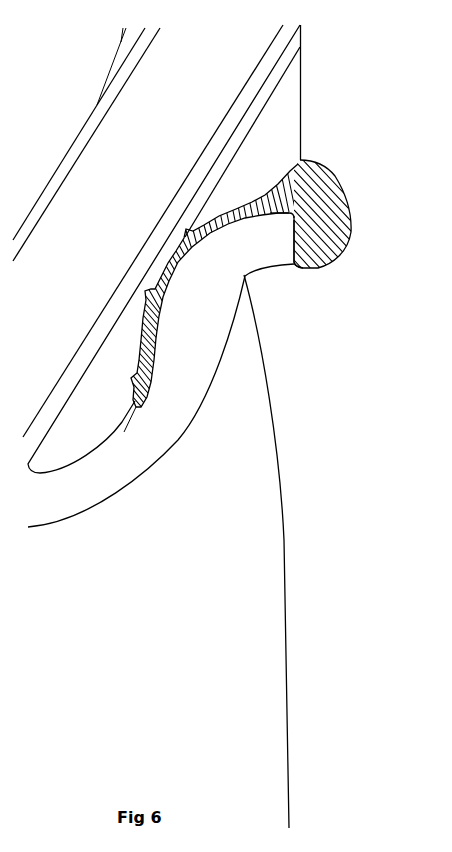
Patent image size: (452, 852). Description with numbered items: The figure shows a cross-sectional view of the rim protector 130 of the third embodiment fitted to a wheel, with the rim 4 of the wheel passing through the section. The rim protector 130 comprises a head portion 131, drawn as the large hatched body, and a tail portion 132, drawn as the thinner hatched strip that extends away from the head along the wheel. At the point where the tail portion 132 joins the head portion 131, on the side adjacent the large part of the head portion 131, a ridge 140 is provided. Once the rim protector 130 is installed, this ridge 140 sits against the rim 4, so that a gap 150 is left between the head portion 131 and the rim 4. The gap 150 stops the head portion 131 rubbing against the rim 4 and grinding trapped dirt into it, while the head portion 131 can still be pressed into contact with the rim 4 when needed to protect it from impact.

The rim 4 is at (270, 244).
The rim protector 130 is at (282, 217).
The head portion 131 is at (366, 220).
The tail portion 132 is at (173, 305).
The ridge 140 is at (284, 232).
The gap 150 is at (297, 285).